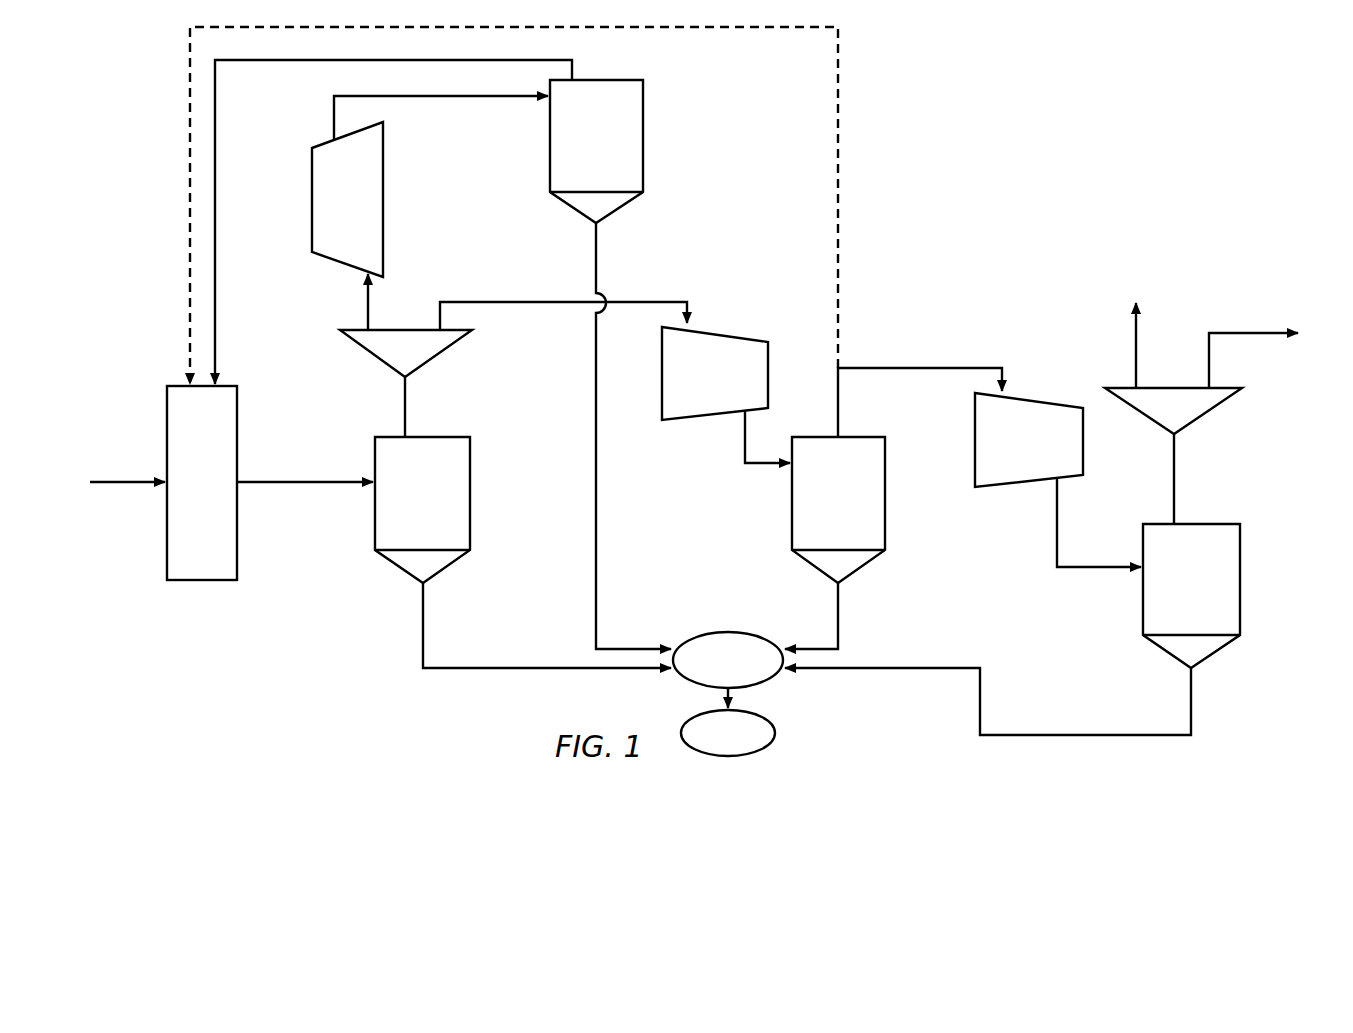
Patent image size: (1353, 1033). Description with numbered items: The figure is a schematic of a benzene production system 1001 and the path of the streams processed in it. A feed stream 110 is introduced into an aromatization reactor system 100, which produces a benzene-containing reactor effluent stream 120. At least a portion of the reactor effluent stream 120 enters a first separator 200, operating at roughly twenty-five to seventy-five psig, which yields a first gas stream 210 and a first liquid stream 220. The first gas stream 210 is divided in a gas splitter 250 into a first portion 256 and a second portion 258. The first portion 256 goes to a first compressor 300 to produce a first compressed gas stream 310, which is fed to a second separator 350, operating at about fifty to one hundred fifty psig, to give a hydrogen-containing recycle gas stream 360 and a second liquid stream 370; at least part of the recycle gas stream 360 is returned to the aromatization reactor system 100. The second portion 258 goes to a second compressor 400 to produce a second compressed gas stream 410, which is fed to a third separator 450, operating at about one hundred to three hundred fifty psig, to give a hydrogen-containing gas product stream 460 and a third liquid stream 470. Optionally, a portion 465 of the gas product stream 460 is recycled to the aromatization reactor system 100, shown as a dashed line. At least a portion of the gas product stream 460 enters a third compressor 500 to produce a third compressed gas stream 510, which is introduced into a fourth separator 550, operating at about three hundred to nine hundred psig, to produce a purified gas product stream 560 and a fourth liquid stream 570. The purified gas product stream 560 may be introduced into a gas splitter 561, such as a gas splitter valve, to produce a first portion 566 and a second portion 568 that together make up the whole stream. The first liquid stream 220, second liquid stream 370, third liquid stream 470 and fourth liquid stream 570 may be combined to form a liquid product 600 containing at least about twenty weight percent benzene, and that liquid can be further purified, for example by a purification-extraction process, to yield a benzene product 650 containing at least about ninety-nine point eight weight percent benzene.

The aromatization reactor system 100 is at (237, 555).
The feed stream 110 is at (150, 480).
The reactor effluent stream 120 is at (258, 480).
The first separator 200 is at (375, 528).
The first gas stream 210 is at (405, 397).
The first liquid stream 220 is at (423, 612).
The gas splitter 250 is at (360, 345).
The first portion of the first gas stream 256 is at (368, 302).
The second portion of the first gas stream 258 is at (500, 305).
The first compressor 300 is at (312, 188).
The first compressed gas stream 310 is at (334, 113).
The second separator 350 is at (643, 125).
The recycle gas stream 360 is at (572, 70).
The second liquid stream 370 is at (596, 250).
The second compressor 400 is at (730, 333).
The second compressed gas stream 410 is at (756, 470).
The third separator 450 is at (792, 525).
The gas product stream 460 is at (838, 398).
The portion of the gas product stream 465 is at (838, 190).
The third liquid stream 470 is at (838, 608).
The third compressor 500 is at (975, 415).
The third compressed gas stream 510 is at (1068, 572).
The fourth separator 550 is at (1143, 612).
The purified gas product stream 560 is at (1174, 483).
The gas splitter 561 is at (1212, 415).
The first portion of the purified gas product stream 566 is at (1136, 335).
The second portion of the purified gas product stream 568 is at (1243, 336).
The fourth liquid stream 570 is at (1191, 697).
The liquid product 600 is at (707, 633).
The benzene product 650 is at (770, 722).
The benzene production system 1001 is at (693, 391).